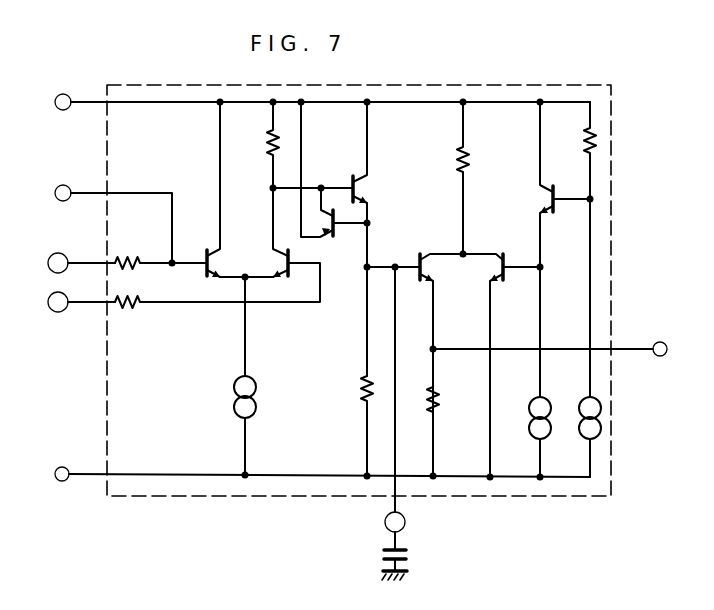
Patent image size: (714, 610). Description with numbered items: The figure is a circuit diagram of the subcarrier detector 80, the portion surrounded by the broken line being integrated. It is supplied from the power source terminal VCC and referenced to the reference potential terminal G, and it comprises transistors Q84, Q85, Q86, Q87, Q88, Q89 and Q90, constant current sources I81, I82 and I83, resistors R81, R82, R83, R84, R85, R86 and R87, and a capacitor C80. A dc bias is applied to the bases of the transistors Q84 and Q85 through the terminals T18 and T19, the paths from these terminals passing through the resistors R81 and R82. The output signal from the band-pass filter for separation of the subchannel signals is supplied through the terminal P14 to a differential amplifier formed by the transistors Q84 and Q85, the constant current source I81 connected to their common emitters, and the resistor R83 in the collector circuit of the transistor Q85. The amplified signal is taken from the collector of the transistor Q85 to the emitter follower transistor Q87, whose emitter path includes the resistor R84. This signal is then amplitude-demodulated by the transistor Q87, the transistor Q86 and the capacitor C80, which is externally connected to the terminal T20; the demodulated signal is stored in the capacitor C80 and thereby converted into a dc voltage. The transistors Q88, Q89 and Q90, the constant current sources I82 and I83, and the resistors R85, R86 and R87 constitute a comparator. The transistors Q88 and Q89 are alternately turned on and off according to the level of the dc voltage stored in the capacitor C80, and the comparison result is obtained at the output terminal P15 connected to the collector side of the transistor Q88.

The subcarrier detector 80 is at (523, 84).
The power source terminal VCC is at (313, 86).
The reference potential terminal G is at (322, 462).
The terminal P14 is at (65, 184).
The output terminal P15 is at (659, 342).
The terminal T18 is at (59, 253).
The terminal T19 is at (60, 312).
The terminal T20 is at (406, 524).
The resistor R81 is at (126, 257).
The resistor R82 is at (130, 308).
The resistor R83 is at (268, 149).
The resistor R84 is at (364, 392).
The resistor R85 is at (438, 400).
The resistor R86 is at (469, 158).
The resistor R87 is at (588, 145).
The transistor Q84 is at (206, 256).
The transistor Q85 is at (282, 256).
The transistor Q86 is at (326, 232).
The emitter follower transistor Q87 is at (366, 194).
The transistor Q88 is at (424, 280).
The transistor Q89 is at (492, 281).
The transistor Q90 is at (550, 203).
The constant current source I81 is at (258, 406).
The constant current source I82 is at (527, 410).
The constant current source I83 is at (577, 410).
The capacitor C80 is at (407, 555).